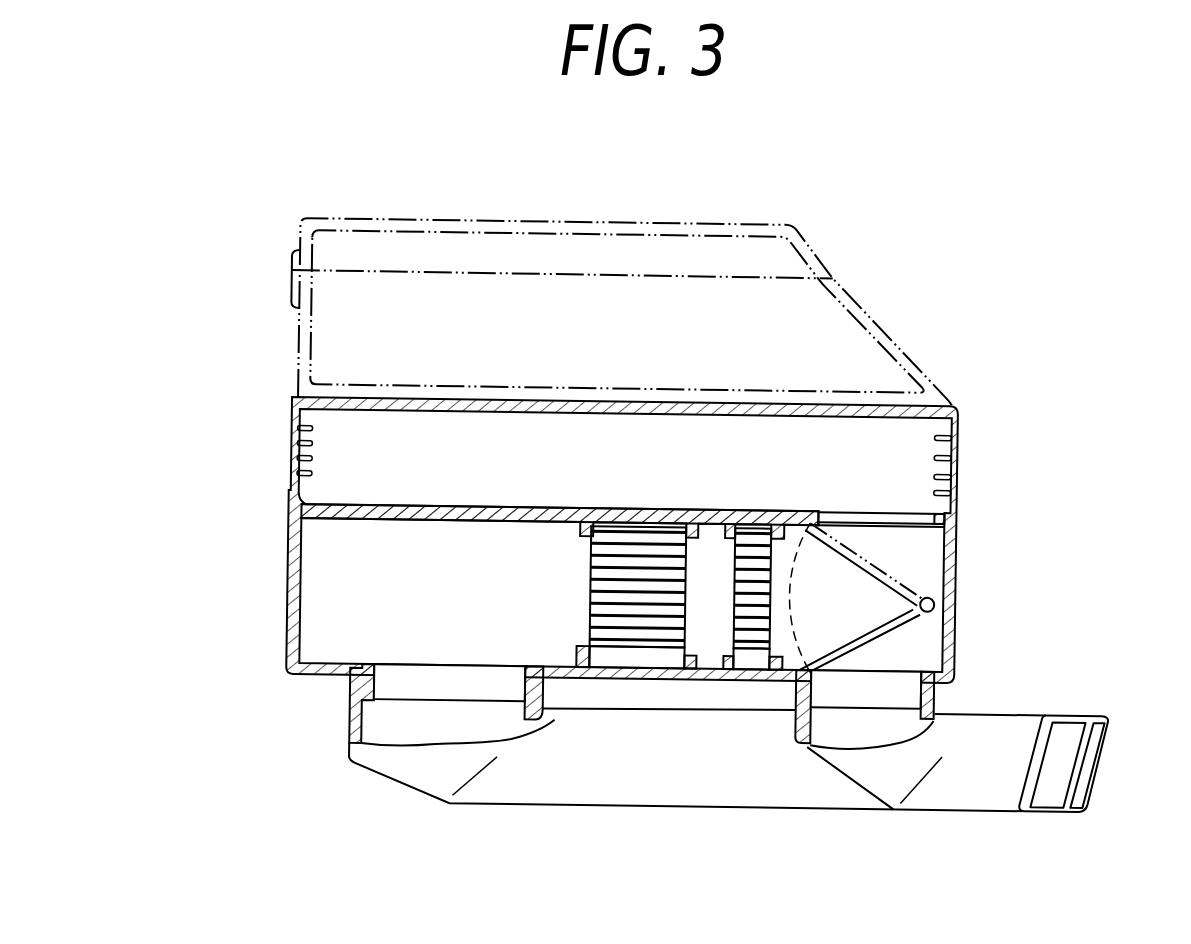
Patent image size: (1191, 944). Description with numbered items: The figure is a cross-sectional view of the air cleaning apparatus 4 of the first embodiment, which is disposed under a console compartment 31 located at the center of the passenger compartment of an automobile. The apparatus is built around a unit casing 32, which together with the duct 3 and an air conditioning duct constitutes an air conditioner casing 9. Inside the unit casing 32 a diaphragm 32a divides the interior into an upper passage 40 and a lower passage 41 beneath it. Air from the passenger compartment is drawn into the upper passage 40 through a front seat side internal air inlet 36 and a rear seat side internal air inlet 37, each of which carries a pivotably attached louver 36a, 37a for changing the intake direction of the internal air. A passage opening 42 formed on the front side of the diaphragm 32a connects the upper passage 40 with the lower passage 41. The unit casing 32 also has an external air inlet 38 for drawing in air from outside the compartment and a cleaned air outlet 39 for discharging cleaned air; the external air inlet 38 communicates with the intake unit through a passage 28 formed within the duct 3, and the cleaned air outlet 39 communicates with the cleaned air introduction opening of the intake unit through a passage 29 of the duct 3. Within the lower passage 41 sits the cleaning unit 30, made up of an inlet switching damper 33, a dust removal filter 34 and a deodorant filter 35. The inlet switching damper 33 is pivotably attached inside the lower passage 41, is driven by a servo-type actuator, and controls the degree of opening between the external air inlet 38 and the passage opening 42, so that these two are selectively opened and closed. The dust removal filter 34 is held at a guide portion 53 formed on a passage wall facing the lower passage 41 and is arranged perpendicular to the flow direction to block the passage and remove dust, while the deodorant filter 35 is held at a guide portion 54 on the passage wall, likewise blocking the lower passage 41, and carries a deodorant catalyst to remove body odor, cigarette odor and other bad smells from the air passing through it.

The duct 3 is at (1030, 711).
The air cleaning apparatus 4 is at (286, 391).
The air conditioner casing 9 is at (937, 818).
The passage 28 is at (1088, 764).
The passage 29 is at (1055, 772).
The cleaning unit 30 is at (712, 852).
The console compartment 31 is at (518, 226).
The unit casing 32 is at (295, 615).
The diaphragm 32a is at (345, 518).
The inlet switching damper 33 is at (883, 638).
The dust removal filter 34 is at (753, 640).
The deodorant filter 35 is at (646, 645).
The front seat side internal air inlet 36 is at (292, 457).
The louver 36a is at (292, 471).
The rear seat side internal air inlet 37 is at (958, 451).
The louver 37a is at (938, 495).
The external air inlet 38 is at (867, 690).
The cleaned air outlet 39 is at (393, 686).
The upper passage 40 is at (612, 470).
The lower passage 41 is at (472, 610).
The passage opening 42 is at (898, 520).
The guide portion 53 is at (776, 665).
The guide portion 54 is at (590, 642).